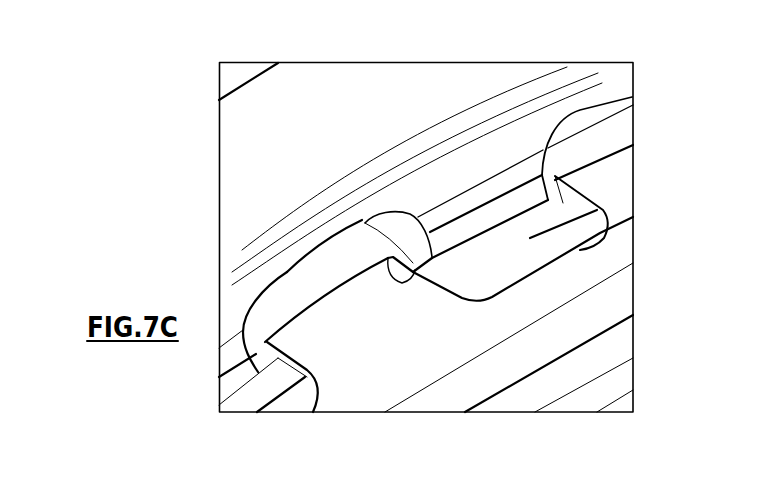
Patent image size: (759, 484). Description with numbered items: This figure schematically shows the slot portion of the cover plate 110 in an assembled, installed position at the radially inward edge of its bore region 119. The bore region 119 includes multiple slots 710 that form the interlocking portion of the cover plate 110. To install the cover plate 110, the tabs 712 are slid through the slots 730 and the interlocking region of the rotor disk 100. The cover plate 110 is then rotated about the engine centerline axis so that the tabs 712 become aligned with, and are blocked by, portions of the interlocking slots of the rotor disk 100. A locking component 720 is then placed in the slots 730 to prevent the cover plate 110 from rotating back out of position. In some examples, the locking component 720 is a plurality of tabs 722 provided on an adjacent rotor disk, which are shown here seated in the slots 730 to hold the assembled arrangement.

The cover plate 110 is at (387, 105).
The bore region 119 is at (423, 197).
The slots 710 is at (300, 295).
The slots 730 is at (388, 258).
The rotor disk 100 is at (563, 207).
The tabs 712 is at (480, 216).
The locking component 720 is at (617, 262).
The tabs 722 is at (312, 335).